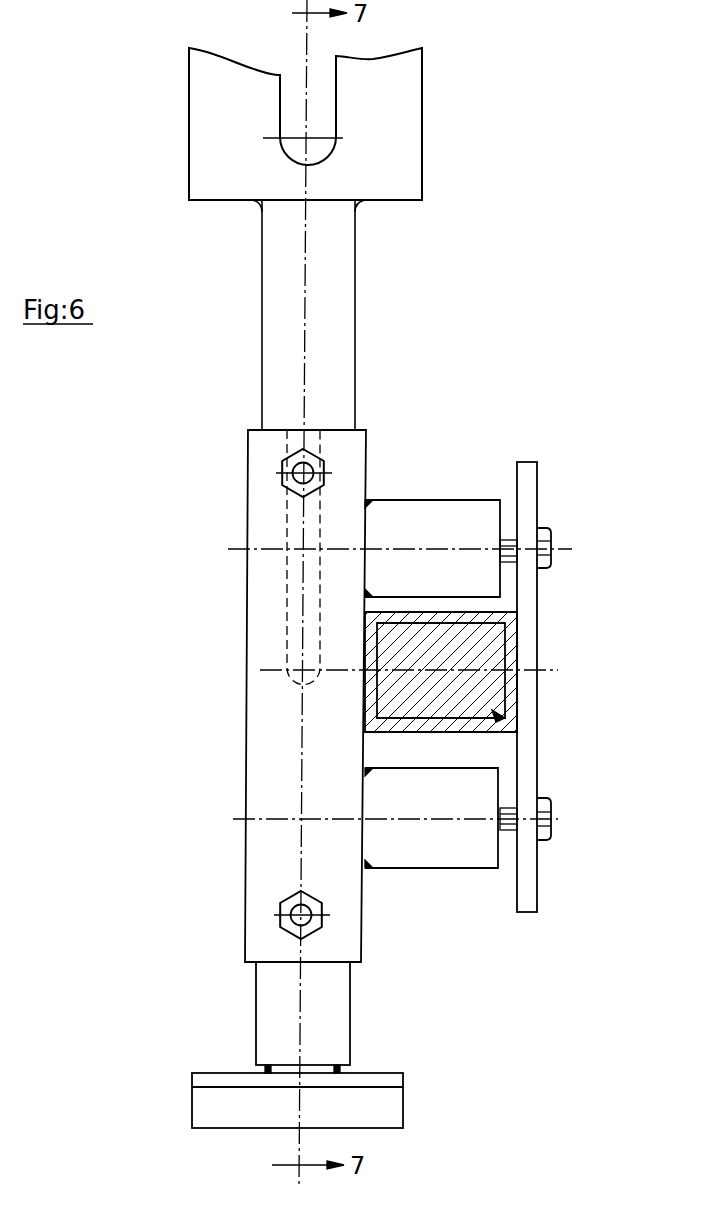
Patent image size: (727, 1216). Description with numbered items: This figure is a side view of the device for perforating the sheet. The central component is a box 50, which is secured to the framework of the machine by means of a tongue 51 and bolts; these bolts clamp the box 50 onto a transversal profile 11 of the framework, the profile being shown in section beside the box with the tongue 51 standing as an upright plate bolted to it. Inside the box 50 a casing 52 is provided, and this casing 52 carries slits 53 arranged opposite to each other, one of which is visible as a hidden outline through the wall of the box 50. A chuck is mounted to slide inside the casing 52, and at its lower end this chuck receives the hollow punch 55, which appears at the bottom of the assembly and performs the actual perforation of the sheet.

The transversal profile 11 is at (493, 612).
The box 50 is at (253, 730).
The tongue 51 is at (527, 658).
The casing 52 is at (333, 1022).
The slits 53 is at (284, 628).
The hollow punch 55 is at (388, 1082).